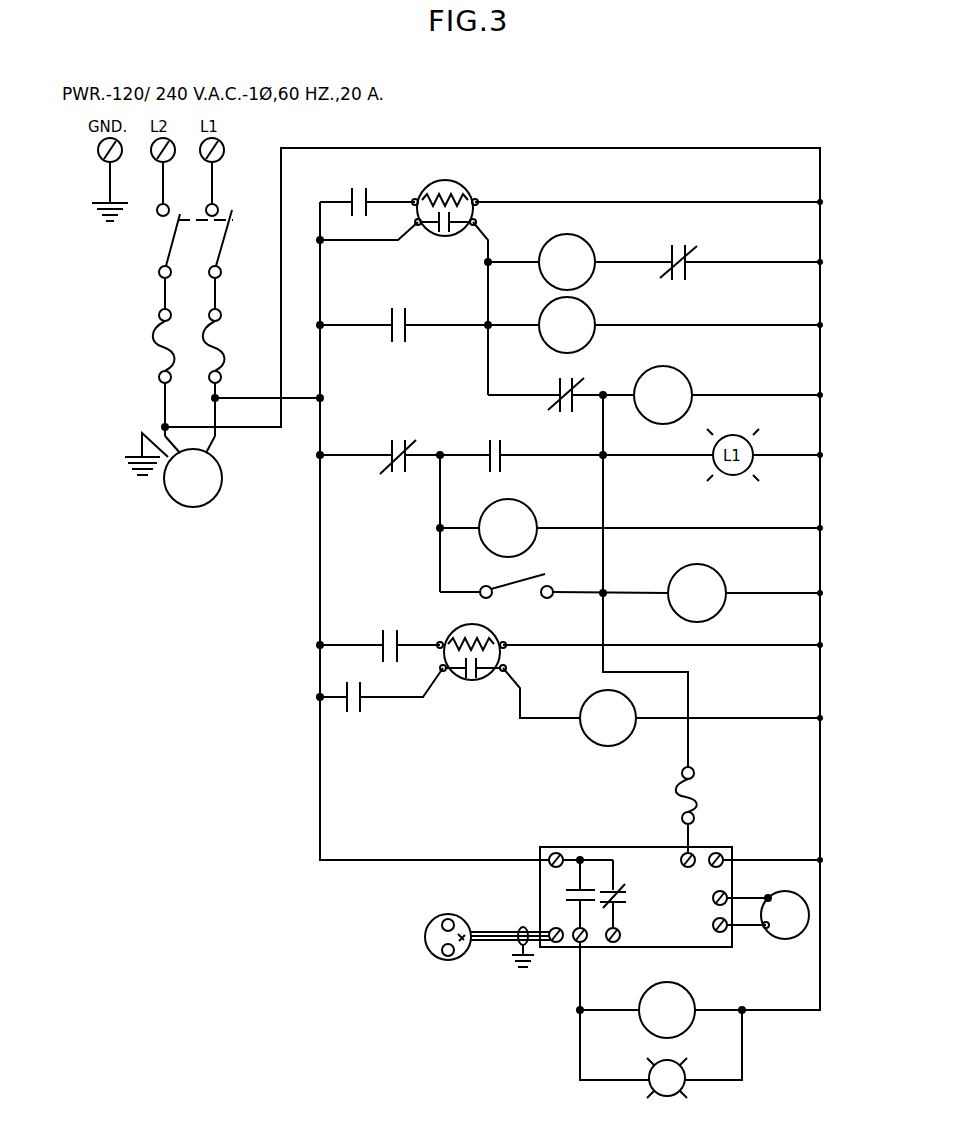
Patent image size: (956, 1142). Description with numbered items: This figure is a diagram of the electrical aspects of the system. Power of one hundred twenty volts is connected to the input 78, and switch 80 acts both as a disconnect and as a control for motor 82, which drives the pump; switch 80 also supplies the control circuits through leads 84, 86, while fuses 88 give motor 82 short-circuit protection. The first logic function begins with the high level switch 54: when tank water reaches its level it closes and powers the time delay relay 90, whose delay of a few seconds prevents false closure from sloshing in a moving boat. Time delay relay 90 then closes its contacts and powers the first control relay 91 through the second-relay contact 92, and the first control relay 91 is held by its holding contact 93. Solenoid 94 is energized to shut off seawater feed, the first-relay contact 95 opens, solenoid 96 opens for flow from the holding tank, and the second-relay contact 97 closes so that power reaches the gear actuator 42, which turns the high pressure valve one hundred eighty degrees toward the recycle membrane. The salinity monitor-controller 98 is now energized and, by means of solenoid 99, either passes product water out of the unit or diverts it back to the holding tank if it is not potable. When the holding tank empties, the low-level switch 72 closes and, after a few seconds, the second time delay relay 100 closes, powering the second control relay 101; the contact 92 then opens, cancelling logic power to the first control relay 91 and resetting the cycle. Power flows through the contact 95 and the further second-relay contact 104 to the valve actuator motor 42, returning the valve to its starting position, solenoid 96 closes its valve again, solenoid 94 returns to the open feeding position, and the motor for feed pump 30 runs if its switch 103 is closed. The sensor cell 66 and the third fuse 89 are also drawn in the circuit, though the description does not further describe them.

The feed pump 30 is at (703, 571).
The gear actuator 42 is at (686, 373).
The high level switch 54 is at (347, 192).
The sensor cell SC-1 66 is at (425, 940).
The low-level switch 72 is at (365, 630).
The input 78 is at (190, 152).
The switch 80 is at (182, 245).
The motor 82 is at (212, 493).
The lead 84 is at (296, 400).
The lead 86 is at (245, 430).
The fuses 88 is at (133, 345).
The fuse F3 89 is at (675, 790).
The time delay relay 90 is at (468, 190).
The control relay CR1 91 is at (590, 241).
The contact CR2 92 is at (690, 257).
The contact CR1 93 is at (410, 316).
The solenoid 94 is at (597, 316).
The contact CR1 95 is at (390, 461).
The solenoid 96 is at (537, 540).
The contact CR2 97 is at (560, 392).
The salinity monitor-controller 98 is at (625, 850).
The solenoid 99 is at (685, 993).
The time delay relay TDR2 100 is at (505, 655).
The control relay CR2 101 is at (590, 745).
The switch 103 is at (500, 585).
The contact CR2 104 is at (508, 465).